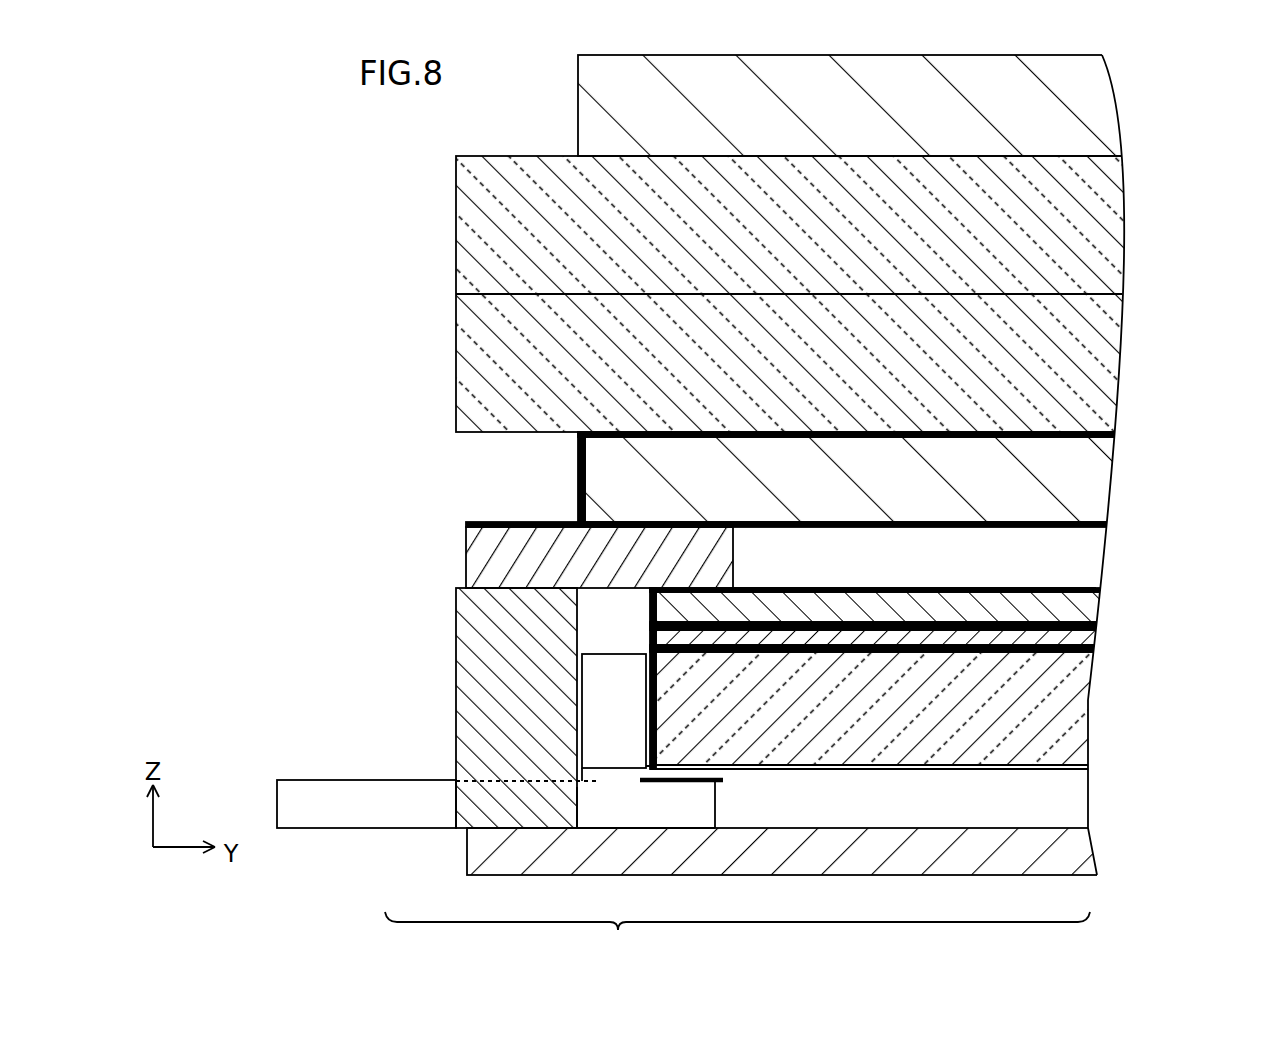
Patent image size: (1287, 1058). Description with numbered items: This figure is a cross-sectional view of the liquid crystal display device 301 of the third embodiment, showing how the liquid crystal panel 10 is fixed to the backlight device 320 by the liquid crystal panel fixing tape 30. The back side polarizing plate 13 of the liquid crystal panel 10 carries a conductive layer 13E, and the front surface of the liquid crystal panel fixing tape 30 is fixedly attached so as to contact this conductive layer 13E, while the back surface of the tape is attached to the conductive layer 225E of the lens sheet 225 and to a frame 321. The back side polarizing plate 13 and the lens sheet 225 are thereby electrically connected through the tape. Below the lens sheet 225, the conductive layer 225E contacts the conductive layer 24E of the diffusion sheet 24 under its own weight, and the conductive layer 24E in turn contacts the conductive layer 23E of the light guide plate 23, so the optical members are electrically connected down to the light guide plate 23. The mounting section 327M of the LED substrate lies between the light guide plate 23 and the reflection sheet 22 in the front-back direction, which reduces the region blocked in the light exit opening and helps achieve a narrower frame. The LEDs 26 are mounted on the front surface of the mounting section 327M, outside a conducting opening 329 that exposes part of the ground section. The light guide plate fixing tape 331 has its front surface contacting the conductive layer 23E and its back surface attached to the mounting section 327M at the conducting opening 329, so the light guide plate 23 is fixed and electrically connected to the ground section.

The liquid crystal panel 10 is at (375, 172).
The liquid crystal display device 301 is at (1163, 91).
The back side polarizing plate 13 is at (605, 479).
The conductive layer of the back side polarizing plate 13E is at (1063, 520).
The liquid crystal panel fixing tape 30 is at (503, 556).
The backlight device 320 is at (737, 937).
The frame 321 is at (468, 813).
The light guide plate fixing tape 331 is at (600, 787).
The conducting opening 329 is at (680, 780).
The LEDs 26 is at (632, 702).
The mounting section 327M is at (593, 800).
The reflection sheet 22 is at (515, 858).
The light guide plate 23 is at (795, 810).
The diffusion sheet 24 is at (935, 690).
The lens sheet 225 is at (1030, 655).
The conductive layer of the lens sheet 225E is at (1078, 597).
The conductive layer of the diffusion sheet 24E is at (1063, 630).
The conductive layer of the light guide plate 23E is at (1065, 655).